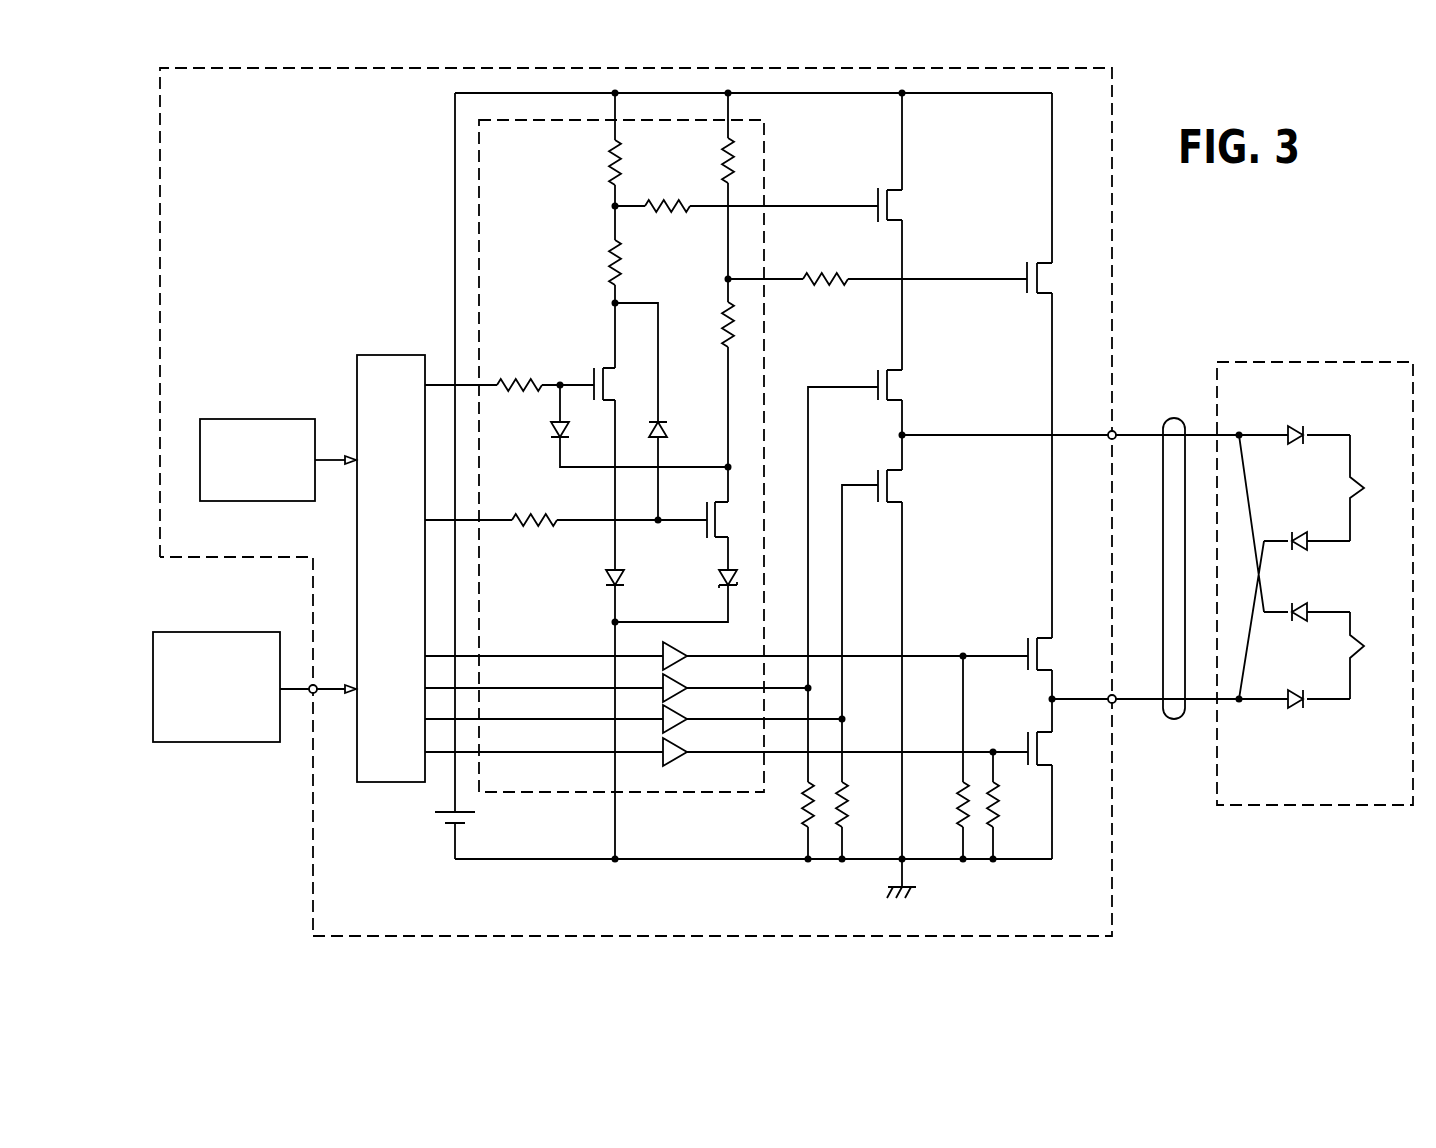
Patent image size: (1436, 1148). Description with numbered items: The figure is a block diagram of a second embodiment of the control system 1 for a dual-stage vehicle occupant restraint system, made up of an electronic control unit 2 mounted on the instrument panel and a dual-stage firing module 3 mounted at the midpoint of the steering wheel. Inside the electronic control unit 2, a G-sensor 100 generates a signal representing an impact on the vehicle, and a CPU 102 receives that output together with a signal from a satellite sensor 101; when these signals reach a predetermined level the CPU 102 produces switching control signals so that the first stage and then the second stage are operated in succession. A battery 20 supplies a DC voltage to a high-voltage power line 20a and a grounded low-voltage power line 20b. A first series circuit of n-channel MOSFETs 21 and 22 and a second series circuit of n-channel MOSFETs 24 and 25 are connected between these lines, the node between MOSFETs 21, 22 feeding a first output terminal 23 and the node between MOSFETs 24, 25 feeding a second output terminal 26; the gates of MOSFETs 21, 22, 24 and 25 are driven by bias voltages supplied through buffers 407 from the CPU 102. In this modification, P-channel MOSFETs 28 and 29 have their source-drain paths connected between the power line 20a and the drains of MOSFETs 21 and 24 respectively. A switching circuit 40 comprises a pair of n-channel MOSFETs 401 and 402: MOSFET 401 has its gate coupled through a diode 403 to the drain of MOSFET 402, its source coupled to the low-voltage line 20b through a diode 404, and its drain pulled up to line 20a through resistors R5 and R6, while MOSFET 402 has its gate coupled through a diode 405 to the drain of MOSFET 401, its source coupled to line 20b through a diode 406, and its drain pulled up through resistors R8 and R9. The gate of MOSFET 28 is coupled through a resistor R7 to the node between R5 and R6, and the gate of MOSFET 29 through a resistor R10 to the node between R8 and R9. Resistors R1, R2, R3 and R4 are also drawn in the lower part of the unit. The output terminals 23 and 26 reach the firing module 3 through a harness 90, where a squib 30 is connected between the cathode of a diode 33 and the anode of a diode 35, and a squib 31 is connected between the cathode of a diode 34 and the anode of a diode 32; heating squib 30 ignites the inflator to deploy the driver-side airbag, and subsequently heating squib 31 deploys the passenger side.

The control system 1 is at (1170, 235).
The electronic control unit 2 is at (1112, 90).
The dual-stage firing module 3 is at (1290, 362).
The battery 20 is at (455, 827).
The high-voltage power line 20a is at (997, 95).
The low-voltage power line 20b is at (1018, 862).
The n-channel MOSFET 21 is at (878, 378).
The n-channel MOSFET 22 is at (878, 508).
The first output terminal 23 is at (1118, 430).
The n-channel MOSFET 24 is at (1028, 646).
The n-channel MOSFET 25 is at (1028, 738).
The second output terminal 26 is at (1118, 695).
The P-channel MOSFET 28 is at (878, 194).
The P-channel MOSFET 29 is at (1027, 270).
The squib 30 is at (1364, 486).
The squib 31 is at (1364, 646).
The diode 32 is at (1292, 605).
The diode 33 is at (1292, 535).
The diode 34 is at (1292, 692).
The diode 35 is at (1292, 430).
The switching circuit 40 is at (524, 166).
The harness 90 is at (1172, 418).
The G-sensor 100 is at (242, 419).
The satellite sensor 101 is at (242, 632).
The CPU 102 is at (390, 355).
The n-channel MOSFET 401 is at (593, 372).
The n-channel MOSFET 402 is at (705, 532).
The diode 403 is at (556, 436).
The diode 404 is at (610, 579).
The diode 405 is at (664, 430).
The diode 406 is at (722, 586).
The buffer 407 is at (681, 658).
The resistor R1 is at (793, 773).
The resistor R2 is at (856, 789).
The resistor R3 is at (949, 757).
The resistor R4 is at (1008, 805).
The pull-up resistor R5 is at (602, 149).
The pull-up resistor R6 is at (602, 254).
The resistor R7 is at (746, 221).
The pull-up resistor R8 is at (714, 186).
The pull-up resistor R9 is at (714, 373).
The resistor R10 is at (877, 264).